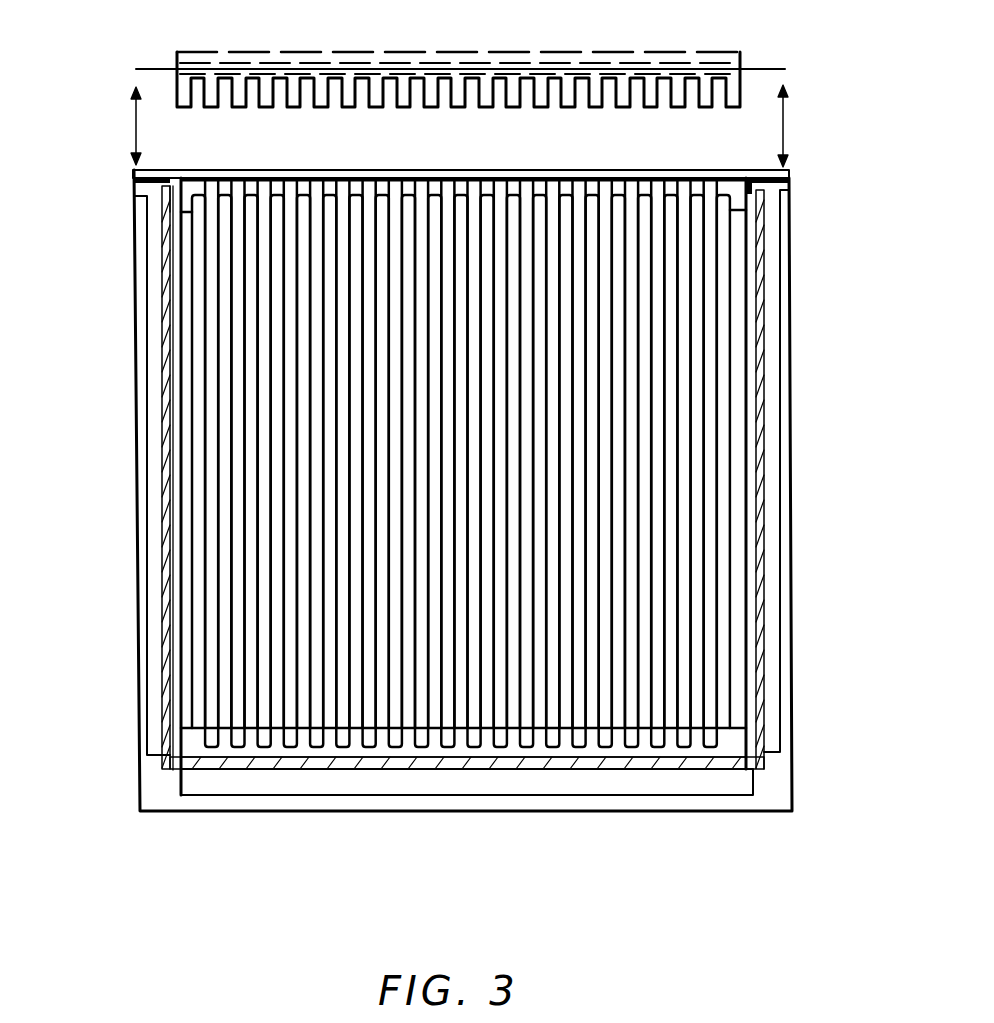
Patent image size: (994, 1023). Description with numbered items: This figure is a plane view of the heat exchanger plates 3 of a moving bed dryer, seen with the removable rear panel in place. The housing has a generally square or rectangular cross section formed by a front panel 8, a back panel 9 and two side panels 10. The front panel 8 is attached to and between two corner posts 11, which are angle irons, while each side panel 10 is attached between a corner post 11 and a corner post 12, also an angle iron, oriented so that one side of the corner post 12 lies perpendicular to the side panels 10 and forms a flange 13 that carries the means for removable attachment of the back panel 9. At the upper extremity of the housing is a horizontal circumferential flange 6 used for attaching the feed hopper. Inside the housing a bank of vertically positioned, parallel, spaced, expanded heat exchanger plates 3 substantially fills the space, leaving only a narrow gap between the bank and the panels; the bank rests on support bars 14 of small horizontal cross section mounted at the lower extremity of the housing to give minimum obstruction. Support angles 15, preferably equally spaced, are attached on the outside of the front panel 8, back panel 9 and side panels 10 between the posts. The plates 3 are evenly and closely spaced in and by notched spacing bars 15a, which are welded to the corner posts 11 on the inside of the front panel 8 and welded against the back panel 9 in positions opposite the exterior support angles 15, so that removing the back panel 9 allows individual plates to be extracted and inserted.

The heat exchanger plate 3 is at (200, 626).
The horizontal circumferential flange 6 is at (789, 418).
The front panel 8 is at (458, 770).
The back panel 9 is at (610, 169).
The side panel 10 is at (767, 517).
The corner post 11 is at (767, 770).
The corner post 12 is at (160, 208).
The flange 13 is at (145, 192).
The support bar 14 is at (737, 667).
The support angle 15 is at (598, 772).
The notched spacing bar 15a is at (317, 755).